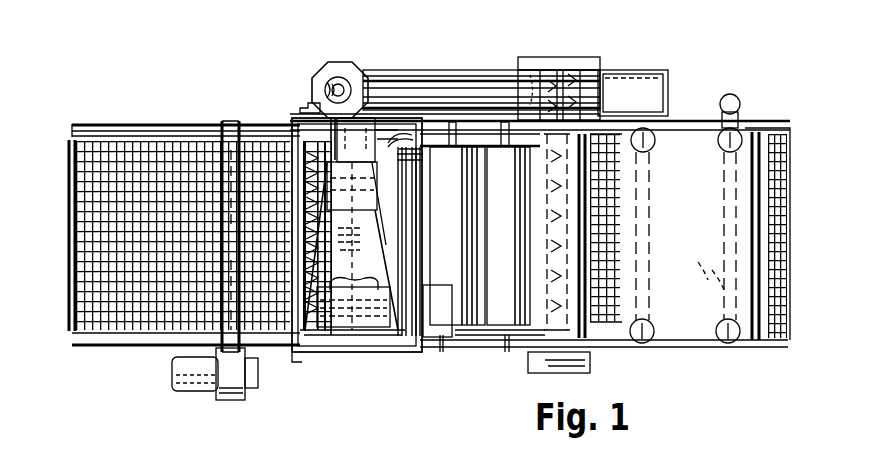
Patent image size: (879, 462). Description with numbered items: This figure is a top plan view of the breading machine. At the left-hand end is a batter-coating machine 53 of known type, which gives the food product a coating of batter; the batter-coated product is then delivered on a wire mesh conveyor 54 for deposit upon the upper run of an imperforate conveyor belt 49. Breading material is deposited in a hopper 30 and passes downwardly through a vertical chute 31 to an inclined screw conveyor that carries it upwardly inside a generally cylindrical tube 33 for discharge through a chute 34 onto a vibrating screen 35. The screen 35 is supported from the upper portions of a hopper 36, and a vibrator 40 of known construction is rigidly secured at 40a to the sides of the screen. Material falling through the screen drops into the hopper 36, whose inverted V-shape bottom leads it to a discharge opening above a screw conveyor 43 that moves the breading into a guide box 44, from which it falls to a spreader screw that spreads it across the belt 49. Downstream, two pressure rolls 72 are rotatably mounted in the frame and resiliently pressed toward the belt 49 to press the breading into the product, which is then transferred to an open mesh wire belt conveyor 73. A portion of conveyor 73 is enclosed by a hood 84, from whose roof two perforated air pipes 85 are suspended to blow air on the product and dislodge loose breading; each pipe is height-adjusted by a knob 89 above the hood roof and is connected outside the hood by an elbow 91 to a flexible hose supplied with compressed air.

The hopper 30 is at (628, 72).
The vertical chute 31 is at (572, 68).
The cylindrical tube 33 is at (452, 72).
The chute 34 is at (362, 88).
The vibrating screen 35 is at (392, 244).
The hopper 36 is at (300, 177).
The vibrator 40 is at (340, 305).
The securing point 40a is at (366, 290).
The screw conveyor 43 is at (298, 172).
The guide box 44 is at (300, 123).
The conveyor belt 49 is at (540, 318).
The batter-coating machine 53 is at (113, 365).
The wire mesh conveyor 54 is at (133, 131).
The pressure rolls 72 is at (500, 312).
The open mesh wire belt conveyor 73 is at (600, 340).
The hood 84 is at (700, 350).
The air pipes 85 is at (655, 272).
The knob 89 is at (720, 147).
The elbow 91 is at (737, 98).